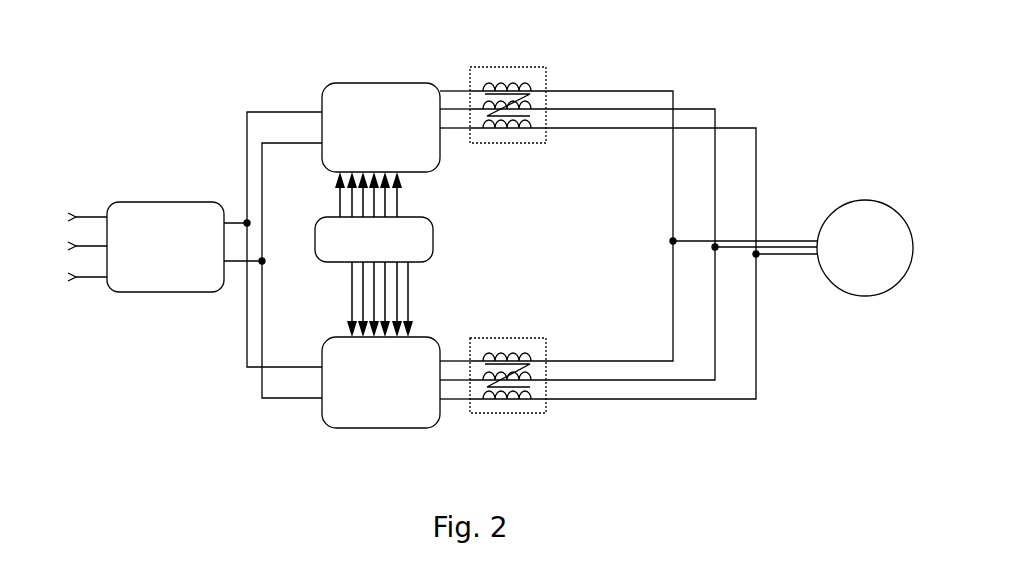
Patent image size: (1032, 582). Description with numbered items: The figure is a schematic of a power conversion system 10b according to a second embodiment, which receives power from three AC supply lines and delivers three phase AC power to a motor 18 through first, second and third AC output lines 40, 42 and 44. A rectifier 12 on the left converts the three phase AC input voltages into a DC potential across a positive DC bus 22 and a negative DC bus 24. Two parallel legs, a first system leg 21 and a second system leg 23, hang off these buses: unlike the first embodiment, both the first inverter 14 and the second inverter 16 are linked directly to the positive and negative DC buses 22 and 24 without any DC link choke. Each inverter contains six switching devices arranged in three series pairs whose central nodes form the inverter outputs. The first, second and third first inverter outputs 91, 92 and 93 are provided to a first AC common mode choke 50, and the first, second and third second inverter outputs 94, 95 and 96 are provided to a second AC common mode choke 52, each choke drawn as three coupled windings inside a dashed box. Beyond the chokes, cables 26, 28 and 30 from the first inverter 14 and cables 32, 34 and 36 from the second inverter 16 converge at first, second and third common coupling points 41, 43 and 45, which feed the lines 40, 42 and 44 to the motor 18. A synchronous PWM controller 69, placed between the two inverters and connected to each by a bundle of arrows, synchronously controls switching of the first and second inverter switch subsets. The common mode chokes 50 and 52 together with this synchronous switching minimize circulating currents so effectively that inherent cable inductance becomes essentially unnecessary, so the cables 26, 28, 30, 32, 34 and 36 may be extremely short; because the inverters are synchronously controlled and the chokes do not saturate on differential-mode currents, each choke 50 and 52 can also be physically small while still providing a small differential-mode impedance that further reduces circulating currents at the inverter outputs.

The power conversion system 10b is at (268, 80).
The first system leg 21 is at (340, 52).
The second system leg 23 is at (283, 422).
The rectifier 12 is at (165, 202).
The first inverter 14 is at (383, 83).
The second inverter 16 is at (330, 337).
The motor 18 is at (863, 200).
The positive DC bus 22 is at (247, 158).
The negative DC bus 24 is at (262, 197).
The first cable 26 is at (642, 91).
The second cable 28 is at (615, 109).
The third cable 30 is at (593, 128).
The first cable of second set 32 is at (663, 361).
The second cable of second set 34 is at (647, 380).
The third cable of second set 36 is at (620, 399).
The first AC output line 40 is at (788, 241).
The second AC output line 42 is at (797, 247).
The third AC output line 44 is at (797, 255).
The first coupling point 41 is at (673, 241).
The second coupling point 43 is at (715, 247).
The third coupling point 45 is at (756, 256).
The first AC common mode choke 50 is at (546, 143).
The second AC common mode choke 52 is at (510, 413).
The synchronous PWM controller 69 is at (433, 238).
The first first inverter output 91 is at (467, 93).
The second first inverter output 92 is at (452, 108).
The third first inverter output 93 is at (447, 130).
The first second inverter output 94 is at (443, 362).
The second second inverter output 95 is at (457, 380).
The third second inverter output 96 is at (463, 399).